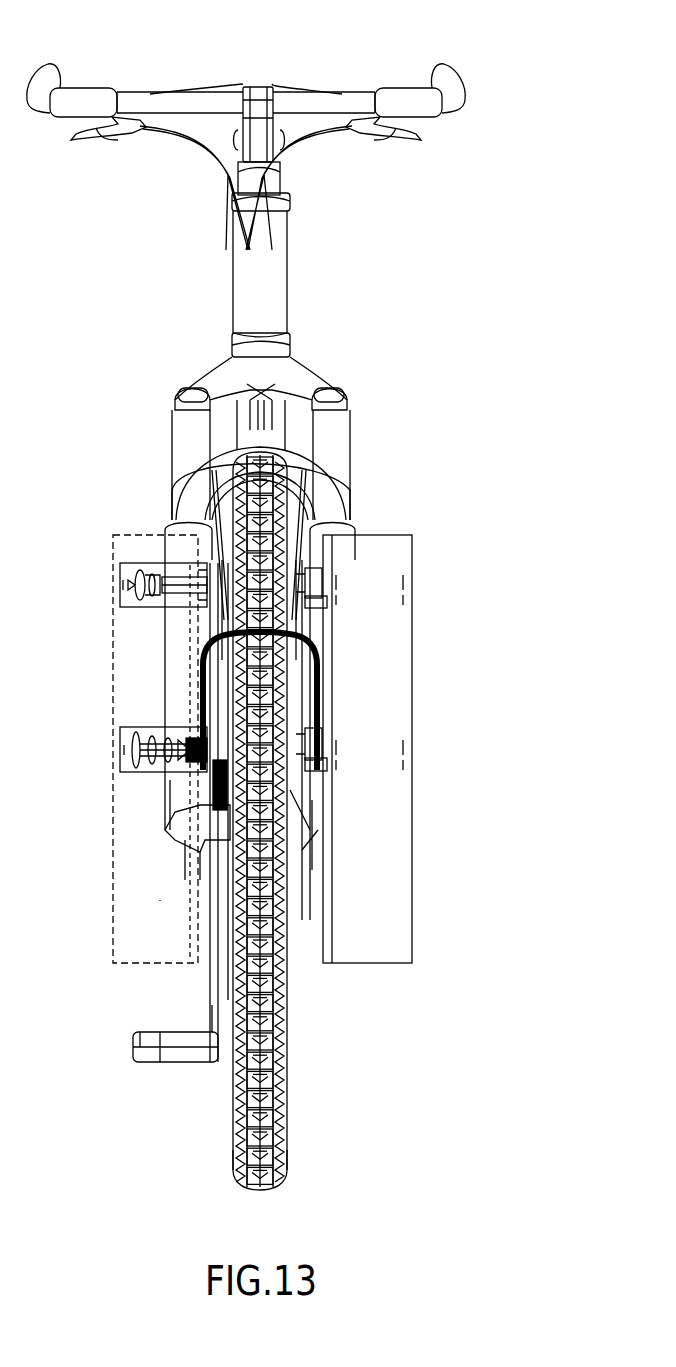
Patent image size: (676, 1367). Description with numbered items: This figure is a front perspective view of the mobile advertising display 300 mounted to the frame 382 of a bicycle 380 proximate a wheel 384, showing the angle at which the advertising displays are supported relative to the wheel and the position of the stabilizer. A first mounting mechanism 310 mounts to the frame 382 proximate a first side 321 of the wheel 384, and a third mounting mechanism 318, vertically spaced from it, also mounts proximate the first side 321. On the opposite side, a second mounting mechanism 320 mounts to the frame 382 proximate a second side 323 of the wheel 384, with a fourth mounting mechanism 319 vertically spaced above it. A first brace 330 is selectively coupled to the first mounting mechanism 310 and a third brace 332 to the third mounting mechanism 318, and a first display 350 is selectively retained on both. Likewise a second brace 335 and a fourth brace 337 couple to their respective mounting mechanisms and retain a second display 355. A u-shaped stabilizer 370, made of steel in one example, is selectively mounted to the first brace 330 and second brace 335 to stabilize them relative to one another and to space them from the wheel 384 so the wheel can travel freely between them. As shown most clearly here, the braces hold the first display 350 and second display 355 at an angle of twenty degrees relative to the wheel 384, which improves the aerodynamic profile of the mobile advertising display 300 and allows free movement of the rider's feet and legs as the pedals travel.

The mobile advertising display 300 is at (457, 462).
The first mounting mechanism 310 is at (213, 770).
The third mounting mechanism 318 is at (213, 607).
The fourth mounting mechanism 319 is at (310, 584).
The second mounting mechanism 320 is at (310, 743).
The first side 321 is at (233, 1165).
The second side 323 is at (287, 1165).
The first brace 330 is at (120, 730).
The third brace 332 is at (120, 565).
The second brace 335 is at (320, 765).
The fourth brace 337 is at (320, 603).
The first display 350 is at (124, 916).
The second display 355 is at (394, 916).
The stabilizer 370 is at (322, 640).
The bicycle 380 is at (301, 33).
The frame 382 is at (343, 440).
The wheel 384 is at (262, 1040).